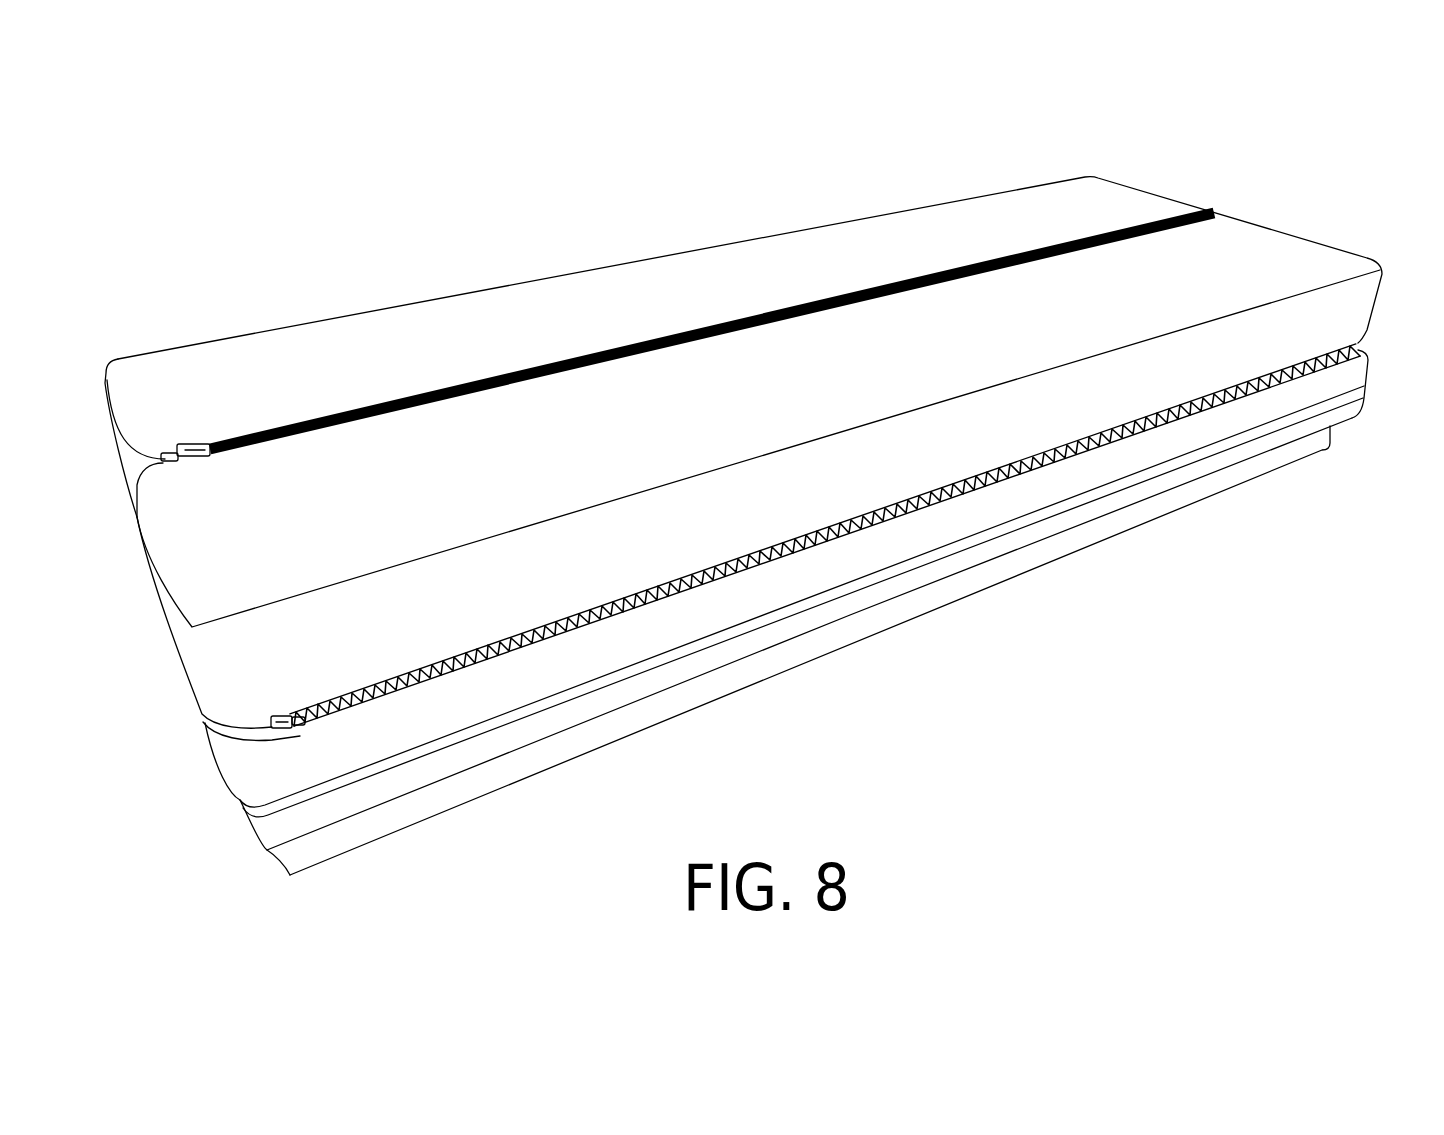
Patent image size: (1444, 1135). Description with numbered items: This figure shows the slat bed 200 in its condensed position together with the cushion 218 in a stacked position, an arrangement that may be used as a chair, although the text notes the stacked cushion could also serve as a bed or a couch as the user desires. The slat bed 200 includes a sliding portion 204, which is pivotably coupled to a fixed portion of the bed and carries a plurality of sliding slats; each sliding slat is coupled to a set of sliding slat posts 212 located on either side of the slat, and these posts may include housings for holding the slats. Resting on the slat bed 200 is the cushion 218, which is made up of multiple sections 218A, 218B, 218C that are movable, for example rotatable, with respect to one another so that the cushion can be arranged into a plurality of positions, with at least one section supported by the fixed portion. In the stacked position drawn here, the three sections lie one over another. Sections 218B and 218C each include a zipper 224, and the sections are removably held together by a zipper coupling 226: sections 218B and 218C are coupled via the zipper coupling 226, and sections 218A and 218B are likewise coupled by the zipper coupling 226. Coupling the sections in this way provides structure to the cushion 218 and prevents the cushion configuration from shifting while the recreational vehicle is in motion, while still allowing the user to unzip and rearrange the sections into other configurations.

The slat bed 200 is at (303, 154).
The sliding portion 204 is at (1172, 548).
The sliding slat posts 212 is at (803, 648).
The cushion 218 is at (787, 149).
The section 218A is at (1340, 413).
The section 218B is at (1284, 250).
The section 218C is at (1118, 200).
The zipper 224 is at (1008, 268).
The zipper coupling 226 is at (330, 420).